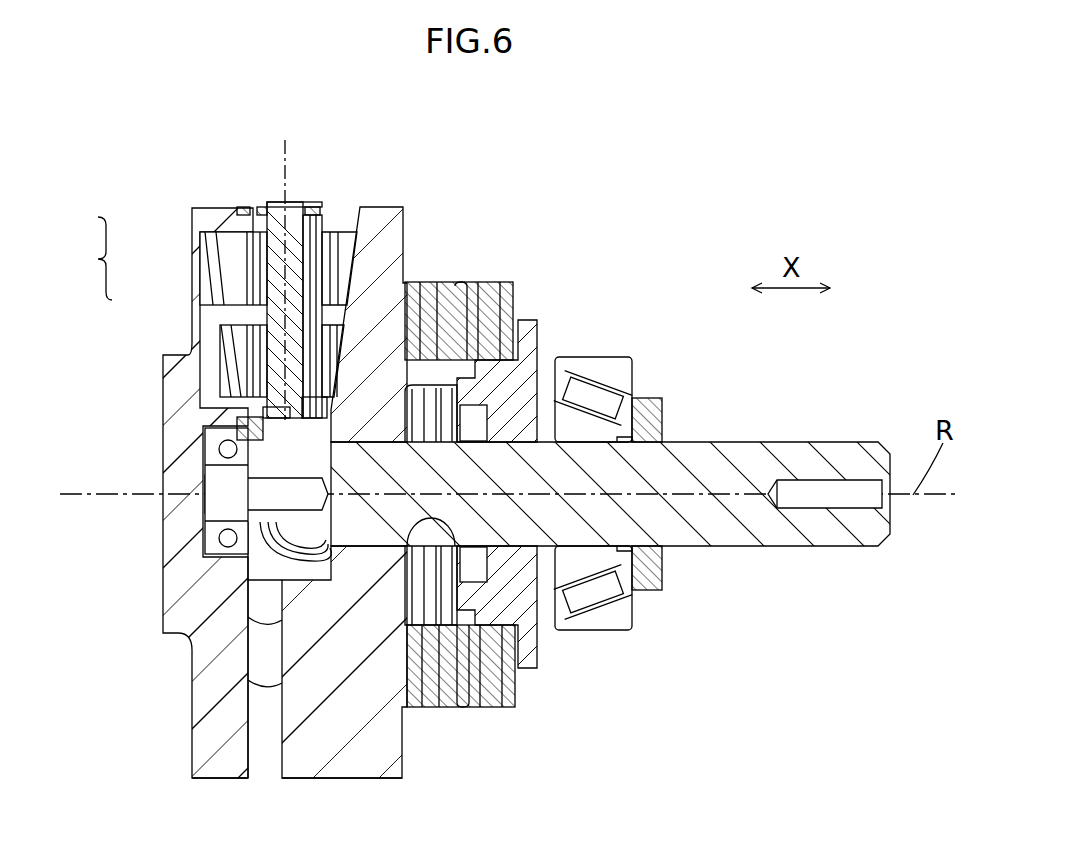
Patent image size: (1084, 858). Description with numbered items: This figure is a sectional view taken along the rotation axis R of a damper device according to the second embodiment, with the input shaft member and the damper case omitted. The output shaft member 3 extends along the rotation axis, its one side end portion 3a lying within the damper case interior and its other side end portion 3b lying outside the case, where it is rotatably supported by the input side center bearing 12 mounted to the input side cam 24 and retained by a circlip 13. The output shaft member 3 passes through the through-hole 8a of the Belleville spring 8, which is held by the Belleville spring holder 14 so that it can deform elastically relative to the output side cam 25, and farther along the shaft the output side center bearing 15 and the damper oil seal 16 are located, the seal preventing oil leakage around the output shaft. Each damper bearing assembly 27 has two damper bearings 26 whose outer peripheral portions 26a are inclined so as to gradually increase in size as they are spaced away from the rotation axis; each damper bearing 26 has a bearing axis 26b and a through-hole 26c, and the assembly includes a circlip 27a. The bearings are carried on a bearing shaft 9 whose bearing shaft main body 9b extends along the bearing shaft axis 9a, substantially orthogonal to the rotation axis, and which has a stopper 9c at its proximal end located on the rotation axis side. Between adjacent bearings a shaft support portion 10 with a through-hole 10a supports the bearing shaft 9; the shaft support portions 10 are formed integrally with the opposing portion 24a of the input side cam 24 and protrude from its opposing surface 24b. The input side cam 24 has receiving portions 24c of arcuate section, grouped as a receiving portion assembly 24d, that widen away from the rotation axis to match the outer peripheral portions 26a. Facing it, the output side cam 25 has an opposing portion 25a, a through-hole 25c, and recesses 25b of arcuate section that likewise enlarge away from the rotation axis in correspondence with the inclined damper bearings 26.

The output shaft member 3 is at (692, 453).
The one side end portion of the output shaft member 3a is at (845, 453).
The other side end portion of the output shaft member 3b is at (545, 400).
The Belleville spring 8 is at (503, 690).
The through-hole of the Belleville spring 8a is at (515, 605).
The bearing shaft 9 is at (248, 352).
The bearing shaft axis 9a is at (312, 207).
The bearing shaft main body 9b is at (235, 345).
The stopper 9c is at (242, 428).
The shaft support portion 10 is at (345, 262).
The through-hole of the shaft support portion 10a is at (262, 207).
The input side center bearing 12 is at (207, 522).
The circlip 13 is at (268, 463).
The Belleville spring holder 14 is at (590, 632).
The output side center bearing 15 is at (620, 610).
The damper oil seal 16 is at (662, 566).
The input side cam 24 is at (190, 350).
The opposing portion of the input side cam 24a is at (240, 774).
The opposing surface of the input side cam 24b is at (247, 764).
The receiving portion 24c is at (230, 330).
The receiving portion assembly 24d is at (156, 261).
The output side cam 25 is at (382, 732).
The opposing portion of the output side cam 25a is at (290, 777).
The recess 25b is at (423, 360).
The through-hole of the output side cam 25c is at (480, 715).
The damper bearing 26 is at (315, 320).
The outer peripheral portion of the damper bearing 26a is at (340, 345).
The bearing axis 26b is at (293, 165).
The through-hole of the damper bearing 26c is at (268, 403).
The damper bearing assembly 27 is at (351, 205).
The circlip of the damper bearing assembly 27a is at (248, 209).